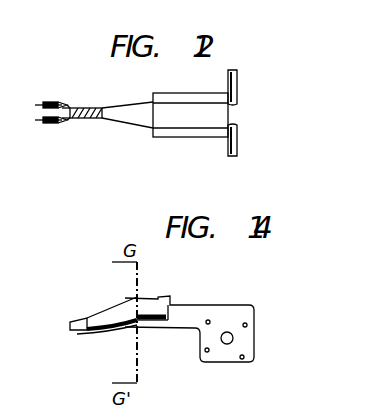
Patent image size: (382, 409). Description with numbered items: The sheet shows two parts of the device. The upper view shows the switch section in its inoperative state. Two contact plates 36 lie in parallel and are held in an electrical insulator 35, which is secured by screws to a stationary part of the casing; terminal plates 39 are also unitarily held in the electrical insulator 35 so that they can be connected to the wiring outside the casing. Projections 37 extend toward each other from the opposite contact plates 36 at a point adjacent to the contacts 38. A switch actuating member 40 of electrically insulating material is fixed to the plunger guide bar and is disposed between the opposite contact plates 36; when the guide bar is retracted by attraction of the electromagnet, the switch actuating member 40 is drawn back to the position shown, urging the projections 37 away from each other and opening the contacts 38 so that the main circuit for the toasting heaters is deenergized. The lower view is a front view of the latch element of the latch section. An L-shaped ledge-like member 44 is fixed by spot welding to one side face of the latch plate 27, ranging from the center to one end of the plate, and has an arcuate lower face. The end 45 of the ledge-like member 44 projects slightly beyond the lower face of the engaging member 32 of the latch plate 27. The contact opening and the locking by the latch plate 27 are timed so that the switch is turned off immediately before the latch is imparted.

In FIG. 14, the latch plate 27 is at (194, 316).
In FIG. 14, the engaging member 32 is at (112, 333).
In FIG. 12, the electrical insulator 35 is at (222, 112).
In FIG. 12, the contact plates 36 is at (136, 128).
In FIG. 12, the projections 37 is at (72, 108).
In FIG. 12, the contacts 38 is at (48, 124).
In FIG. 12, the terminal plates 39 is at (238, 82).
In FIG. 12, the switch actuating member 40 is at (92, 120).
In FIG. 14, the ledge-like member 44 is at (155, 328).
In FIG. 14, the end of ledge-like member 45 is at (85, 331).